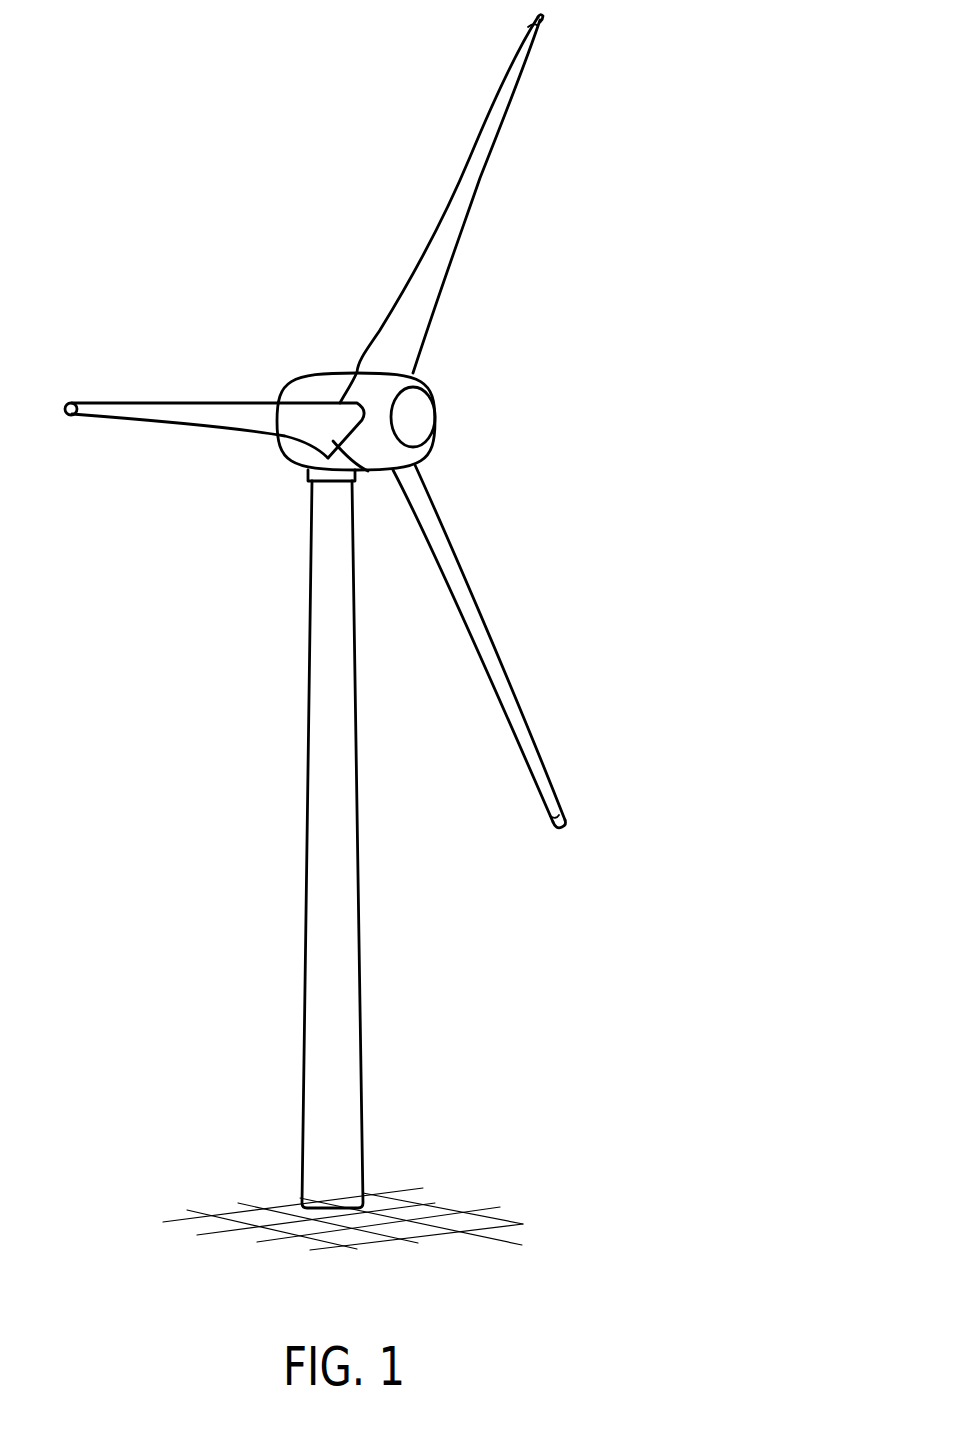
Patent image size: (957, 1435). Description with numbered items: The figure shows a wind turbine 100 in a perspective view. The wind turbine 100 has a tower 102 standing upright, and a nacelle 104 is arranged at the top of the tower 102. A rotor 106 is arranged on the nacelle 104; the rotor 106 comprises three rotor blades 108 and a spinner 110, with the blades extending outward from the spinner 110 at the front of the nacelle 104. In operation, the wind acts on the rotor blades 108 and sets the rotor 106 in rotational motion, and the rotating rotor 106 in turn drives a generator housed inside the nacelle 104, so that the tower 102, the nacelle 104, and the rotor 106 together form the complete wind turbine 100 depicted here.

The wind turbine 100 is at (240, 568).
The tower 102 is at (352, 940).
The nacelle 104 is at (318, 385).
The rotor 106 is at (670, 235).
The rotor blades 108 is at (457, 190).
The spinner 110 is at (422, 417).